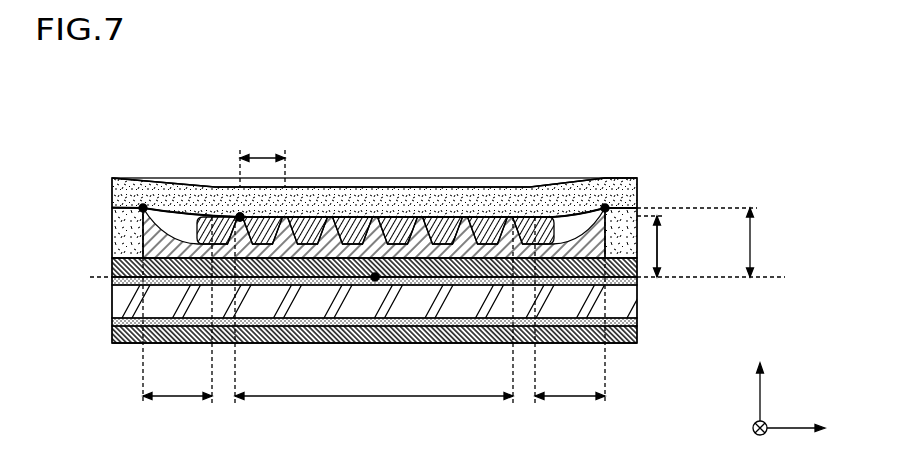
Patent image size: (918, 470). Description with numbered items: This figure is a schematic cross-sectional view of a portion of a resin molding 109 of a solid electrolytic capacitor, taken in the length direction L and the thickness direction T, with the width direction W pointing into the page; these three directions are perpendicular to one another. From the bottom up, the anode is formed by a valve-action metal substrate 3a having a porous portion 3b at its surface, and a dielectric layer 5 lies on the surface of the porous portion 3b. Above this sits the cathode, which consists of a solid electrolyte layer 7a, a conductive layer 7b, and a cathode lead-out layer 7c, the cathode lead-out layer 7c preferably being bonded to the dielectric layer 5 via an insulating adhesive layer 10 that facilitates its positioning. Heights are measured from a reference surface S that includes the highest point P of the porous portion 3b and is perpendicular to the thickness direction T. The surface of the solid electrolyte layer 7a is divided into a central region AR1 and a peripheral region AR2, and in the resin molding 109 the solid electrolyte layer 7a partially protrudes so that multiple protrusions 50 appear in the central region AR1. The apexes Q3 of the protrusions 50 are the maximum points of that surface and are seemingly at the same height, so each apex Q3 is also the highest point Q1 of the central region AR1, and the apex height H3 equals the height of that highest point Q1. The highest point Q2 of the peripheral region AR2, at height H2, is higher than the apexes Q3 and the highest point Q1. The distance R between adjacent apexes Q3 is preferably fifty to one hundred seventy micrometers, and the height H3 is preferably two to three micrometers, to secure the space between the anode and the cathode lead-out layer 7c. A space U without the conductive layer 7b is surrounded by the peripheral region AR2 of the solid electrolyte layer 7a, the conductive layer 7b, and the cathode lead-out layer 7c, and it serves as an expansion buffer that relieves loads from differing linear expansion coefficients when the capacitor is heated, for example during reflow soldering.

The cathode lead-out layer 7c is at (112, 183).
The conductive layer 7b is at (112, 206).
The solid electrolyte layer 7a is at (112, 226).
The insulating adhesive layer 10 is at (112, 247).
The dielectric layer 5 is at (112, 268).
The porous portion 3b is at (112, 281).
The valve-action metal substrate 3a is at (120, 302).
The protrusions 50 is at (427, 218).
The resin molding 109 is at (690, 106).
The highest point of the peripheral region Q2 is at (143, 208).
The apexes of the protrusions Q3 is at (240, 216).
The highest point of the central region Q1 is at (240, 217).
The space U is at (168, 214).
The distance between adjacent apexes R is at (262, 154).
The highest point of the porous portion P is at (375, 277).
The reference surface S is at (447, 278).
The height of the apex of each protrusion H3 is at (687, 246).
The height of the highest point of the peripheral region H2 is at (713, 242).
The central region AR1 is at (374, 327).
The peripheral region AR2 is at (374, 323).
The thickness direction T is at (761, 373).
The width direction W is at (745, 425).
The length direction L is at (806, 427).